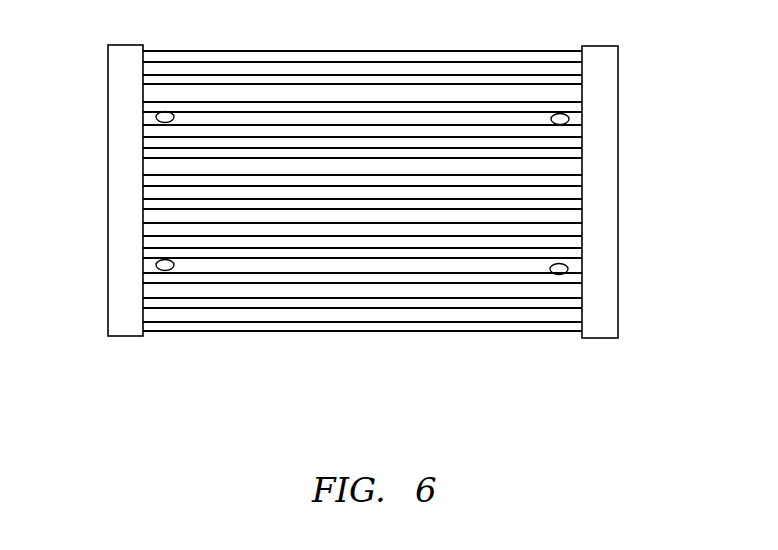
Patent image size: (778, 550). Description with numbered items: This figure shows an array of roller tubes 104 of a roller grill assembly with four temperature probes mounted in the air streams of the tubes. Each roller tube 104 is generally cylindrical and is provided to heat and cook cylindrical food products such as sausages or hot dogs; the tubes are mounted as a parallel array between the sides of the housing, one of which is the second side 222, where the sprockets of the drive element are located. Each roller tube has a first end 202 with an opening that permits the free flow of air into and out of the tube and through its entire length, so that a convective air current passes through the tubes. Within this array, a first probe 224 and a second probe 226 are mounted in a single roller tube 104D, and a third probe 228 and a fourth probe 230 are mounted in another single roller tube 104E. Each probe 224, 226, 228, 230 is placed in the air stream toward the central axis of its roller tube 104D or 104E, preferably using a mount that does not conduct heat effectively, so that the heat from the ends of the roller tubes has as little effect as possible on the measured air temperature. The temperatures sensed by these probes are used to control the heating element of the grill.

The roller tube 104 is at (495, 51).
The roller tube 104D is at (325, 118).
The roller tube 104E is at (243, 265).
The first end 202 is at (152, 128).
The second side 222 is at (122, 336).
The first probe 224 is at (156, 117).
The second probe 226 is at (569, 119).
The third probe 228 is at (156, 265).
The fourth probe 230 is at (568, 269).